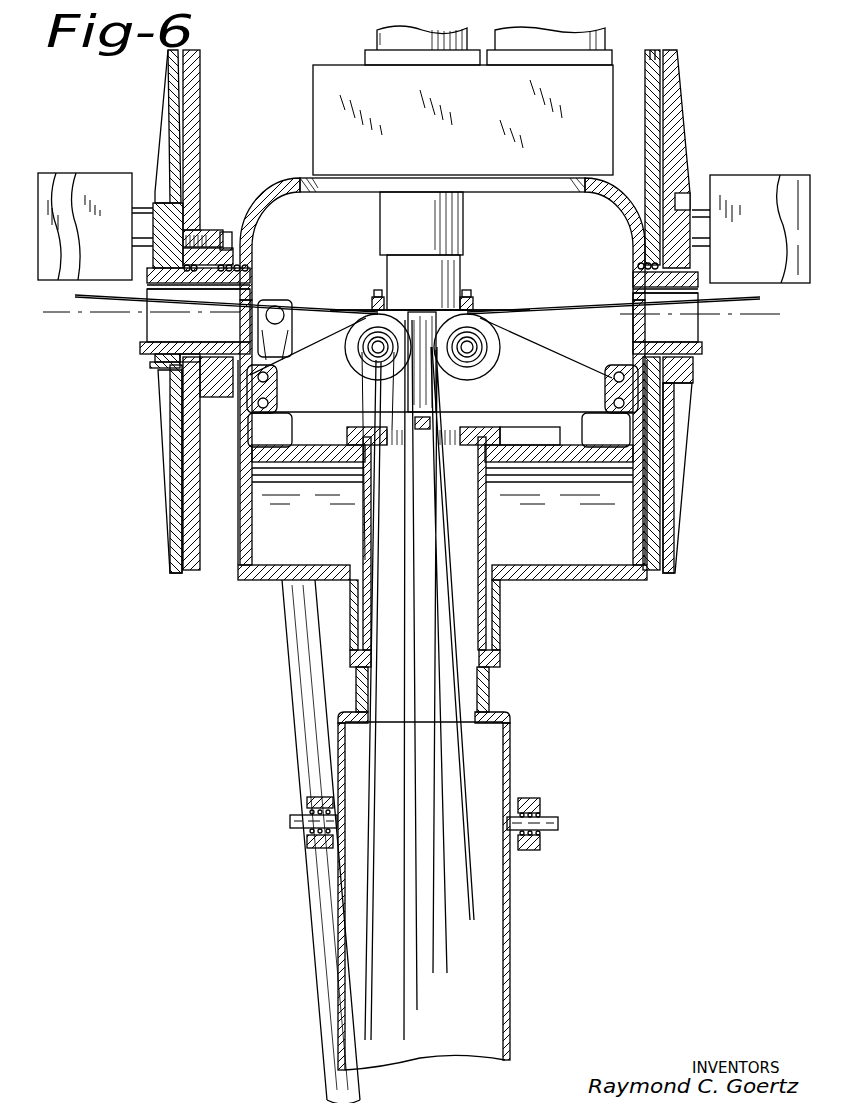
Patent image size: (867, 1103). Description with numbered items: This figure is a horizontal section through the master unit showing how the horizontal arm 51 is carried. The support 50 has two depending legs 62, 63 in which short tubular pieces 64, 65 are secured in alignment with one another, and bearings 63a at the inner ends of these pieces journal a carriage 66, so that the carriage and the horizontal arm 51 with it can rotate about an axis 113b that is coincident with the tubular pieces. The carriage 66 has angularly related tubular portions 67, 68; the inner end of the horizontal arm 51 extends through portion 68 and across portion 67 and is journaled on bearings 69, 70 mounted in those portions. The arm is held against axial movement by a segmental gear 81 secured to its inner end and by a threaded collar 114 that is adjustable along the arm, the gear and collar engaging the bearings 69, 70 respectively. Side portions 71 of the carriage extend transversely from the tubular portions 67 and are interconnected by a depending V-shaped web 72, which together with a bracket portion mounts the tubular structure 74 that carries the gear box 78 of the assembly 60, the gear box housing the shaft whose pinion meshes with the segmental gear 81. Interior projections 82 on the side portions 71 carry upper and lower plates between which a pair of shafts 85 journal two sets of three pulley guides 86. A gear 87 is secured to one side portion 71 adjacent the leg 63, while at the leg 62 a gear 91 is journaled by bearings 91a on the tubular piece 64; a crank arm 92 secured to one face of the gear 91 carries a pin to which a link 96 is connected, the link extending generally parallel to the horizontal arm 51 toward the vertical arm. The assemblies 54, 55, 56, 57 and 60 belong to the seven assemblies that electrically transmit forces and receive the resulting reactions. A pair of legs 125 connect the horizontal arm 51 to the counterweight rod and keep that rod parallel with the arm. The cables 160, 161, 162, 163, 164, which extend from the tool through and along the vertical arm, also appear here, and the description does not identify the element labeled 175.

The support 50 is at (686, 96).
The horizontal arm 51 is at (514, 752).
The assembly 54 is at (101, 172).
The assembly 55 is at (62, 173).
The assembly 56 is at (786, 174).
The assembly 57 is at (751, 177).
The assembly 60 is at (328, 62).
The leg 62 is at (174, 95).
The leg 63 is at (668, 138).
The bearings 63a is at (249, 266).
The short tubular piece 64 is at (154, 273).
The short tubular piece 65 is at (704, 272).
The carriage 66 is at (256, 579).
The tubular portion 67 is at (263, 572).
The tubular portion 68 is at (502, 616).
The bearing 69 is at (489, 456).
The bearing 70 is at (500, 658).
The side portions 71 is at (246, 428).
The V-shaped web 72 is at (542, 190).
The tubular structure 74 is at (396, 228).
The gear box 78 is at (322, 78).
The segmental gear 81 is at (509, 430).
The interior projections 82 is at (279, 382).
The shafts 85 is at (366, 346).
The pulley guides 86 is at (376, 370).
The gear 87 is at (652, 58).
The gear 91 is at (193, 132).
The bearings 91a is at (222, 298).
The crank arm 92 is at (208, 232).
The link 96 is at (296, 662).
The axis 113b is at (768, 314).
The threaded collar 114 is at (491, 682).
The legs 125 is at (534, 798).
The cable 160 is at (129, 355).
The cable 161 is at (119, 370).
The cable 162 is at (126, 300).
The cable 163 is at (430, 294).
The cable 164 is at (444, 286).
The tape guide 175 is at (538, 300).